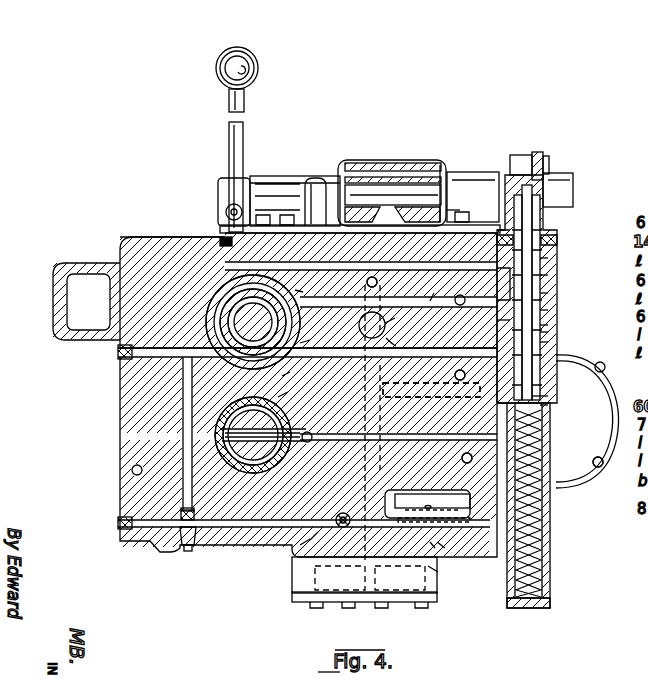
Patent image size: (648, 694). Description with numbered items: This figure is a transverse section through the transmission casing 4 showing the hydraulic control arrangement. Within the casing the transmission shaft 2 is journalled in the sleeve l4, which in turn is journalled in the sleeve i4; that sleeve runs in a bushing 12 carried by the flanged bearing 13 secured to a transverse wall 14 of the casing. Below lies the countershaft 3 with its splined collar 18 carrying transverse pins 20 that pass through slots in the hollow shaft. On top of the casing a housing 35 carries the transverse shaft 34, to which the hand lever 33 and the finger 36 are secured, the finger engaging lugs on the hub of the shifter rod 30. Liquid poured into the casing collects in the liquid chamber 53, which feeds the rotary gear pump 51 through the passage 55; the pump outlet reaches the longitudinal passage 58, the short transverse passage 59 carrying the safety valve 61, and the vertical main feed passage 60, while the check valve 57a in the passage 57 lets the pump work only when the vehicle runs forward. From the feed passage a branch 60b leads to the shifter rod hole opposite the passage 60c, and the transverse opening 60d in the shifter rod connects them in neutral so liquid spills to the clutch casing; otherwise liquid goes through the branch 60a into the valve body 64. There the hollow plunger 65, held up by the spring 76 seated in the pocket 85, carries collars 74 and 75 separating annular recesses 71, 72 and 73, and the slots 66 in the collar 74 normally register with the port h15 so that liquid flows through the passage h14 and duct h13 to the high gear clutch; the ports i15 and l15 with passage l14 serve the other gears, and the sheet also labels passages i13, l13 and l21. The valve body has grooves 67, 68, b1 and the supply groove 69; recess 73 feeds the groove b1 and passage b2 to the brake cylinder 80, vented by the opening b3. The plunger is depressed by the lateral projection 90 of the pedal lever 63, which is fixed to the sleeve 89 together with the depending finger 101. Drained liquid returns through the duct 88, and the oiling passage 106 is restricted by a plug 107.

The transmission shaft 2 is at (212, 313).
The countershaft 3 is at (276, 454).
The transmission casing 4 is at (145, 238).
The bushing 12 is at (246, 384).
The flanged bearing 13 is at (254, 359).
The transverse wall 14 is at (164, 264).
The collar 18 is at (242, 462).
The transverse pin 20 is at (238, 446).
The shifter rod 30 is at (366, 364).
The lever 33 is at (244, 136).
The transverse shaft 34 is at (378, 184).
The housing 35 is at (434, 188).
The finger 36 is at (316, 192).
The rotary gear pump 51 is at (438, 572).
The liquid chamber 53 is at (533, 500).
The passage 55 is at (435, 549).
The passage 57 is at (314, 562).
The check valve 57a is at (301, 554).
The passage 58 is at (343, 511).
The transverse passage 59 is at (368, 562).
The main feed passage 60 is at (384, 456).
The branch 60a is at (414, 385).
The branch 60b is at (404, 347).
The passage 60c is at (387, 285).
The transverse opening 60d is at (360, 320).
The safety valve 61 is at (450, 550).
The pedal lever 63 is at (540, 156).
The valve body 64 is at (548, 240).
The hollow plunger 65 is at (548, 216).
The slots 66 is at (540, 332).
The annular groove 67 is at (546, 264).
The annular groove 68 is at (550, 342).
The liquid supply groove 69 is at (546, 408).
The annular recess 71 is at (552, 225).
The annular recess 72 is at (548, 325).
The annular recess 73 is at (550, 357).
The collar 74 is at (504, 275).
The collar 75 is at (506, 327).
The spring 76 is at (543, 528).
The cylinder 80 is at (598, 464).
The pocket 85 is at (547, 596).
The duct 88 is at (81, 289).
The sleeve 89 is at (450, 183).
The lateral projection 90 is at (522, 154).
The depending finger 101 is at (498, 204).
The passage 106 is at (224, 550).
The plug 107 is at (182, 514).
The duct h13 is at (236, 305).
The passage h14 is at (230, 238).
The annular port h15 is at (544, 278).
The sleeve i4 is at (289, 393).
The passage i13 is at (309, 337).
The annular port i15 is at (542, 296).
The sleeve l4 is at (293, 375).
The passage l13 is at (307, 282).
The passage l14 is at (435, 309).
The annular port l15 is at (538, 312).
The passage l21 is at (357, 445).
The annular groove b1 is at (540, 396).
The passage b2 is at (460, 376).
The vent opening b3 is at (465, 454).